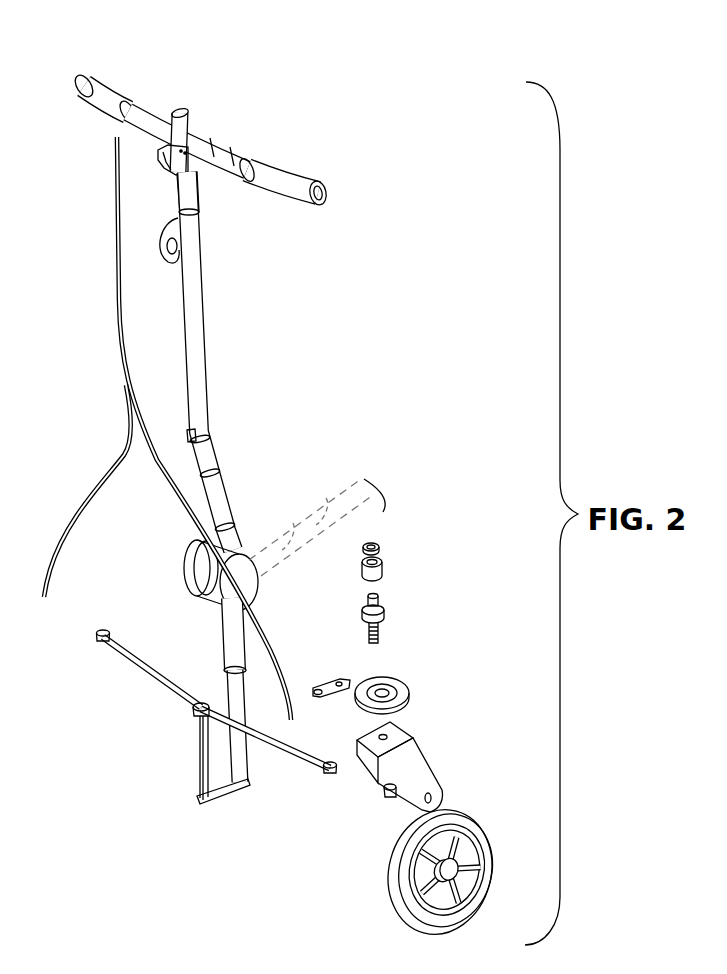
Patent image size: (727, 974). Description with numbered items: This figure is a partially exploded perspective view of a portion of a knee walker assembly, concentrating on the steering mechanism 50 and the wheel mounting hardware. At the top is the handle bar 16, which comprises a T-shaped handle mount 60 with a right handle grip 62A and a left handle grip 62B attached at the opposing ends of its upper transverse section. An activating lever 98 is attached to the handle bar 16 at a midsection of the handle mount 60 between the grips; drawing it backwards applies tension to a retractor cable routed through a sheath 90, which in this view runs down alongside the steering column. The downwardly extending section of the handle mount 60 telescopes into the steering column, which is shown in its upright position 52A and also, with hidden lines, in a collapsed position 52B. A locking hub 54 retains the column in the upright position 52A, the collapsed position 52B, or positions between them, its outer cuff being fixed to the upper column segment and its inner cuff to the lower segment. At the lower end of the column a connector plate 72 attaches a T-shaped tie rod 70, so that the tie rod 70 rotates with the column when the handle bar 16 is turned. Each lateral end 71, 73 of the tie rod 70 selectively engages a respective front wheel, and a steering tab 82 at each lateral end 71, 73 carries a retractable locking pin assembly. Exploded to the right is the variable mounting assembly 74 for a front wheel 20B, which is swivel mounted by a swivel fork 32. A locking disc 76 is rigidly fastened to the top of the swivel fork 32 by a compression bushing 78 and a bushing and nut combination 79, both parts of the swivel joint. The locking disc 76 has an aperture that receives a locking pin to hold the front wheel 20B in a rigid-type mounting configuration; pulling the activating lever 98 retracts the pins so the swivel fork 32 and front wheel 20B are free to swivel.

The handle bar 16 is at (229, 160).
The right handle grip 62A is at (97, 92).
The left handle grip 62B is at (287, 175).
The activating lever 98 is at (170, 123).
The T-shaped handle mount 60 is at (184, 190).
The steering mechanism 50 is at (303, 370).
The upright position of the steering column 52A is at (207, 347).
The collapsed position of the steering column 52B is at (303, 520).
The locking hub 54 is at (193, 567).
The sheath 90 is at (117, 322).
The T-shaped tie rod 70 is at (167, 687).
The lateral end of the tie rod 71 is at (97, 640).
The connector plate 72 is at (225, 805).
The lateral end of the tie rod 73 is at (327, 775).
The variable mounting assembly 74 is at (460, 592).
The bushing and nut combination 79 is at (383, 563).
The compression bushing 78 is at (387, 607).
The steering tab 82 is at (314, 682).
The locking disc 76 is at (410, 683).
The swivel fork 32 is at (423, 760).
The front wheel 20B is at (393, 882).